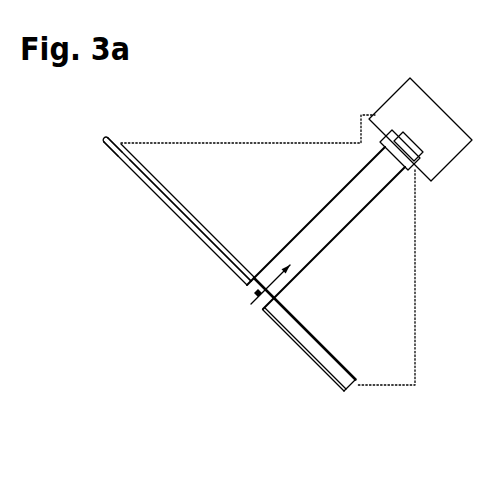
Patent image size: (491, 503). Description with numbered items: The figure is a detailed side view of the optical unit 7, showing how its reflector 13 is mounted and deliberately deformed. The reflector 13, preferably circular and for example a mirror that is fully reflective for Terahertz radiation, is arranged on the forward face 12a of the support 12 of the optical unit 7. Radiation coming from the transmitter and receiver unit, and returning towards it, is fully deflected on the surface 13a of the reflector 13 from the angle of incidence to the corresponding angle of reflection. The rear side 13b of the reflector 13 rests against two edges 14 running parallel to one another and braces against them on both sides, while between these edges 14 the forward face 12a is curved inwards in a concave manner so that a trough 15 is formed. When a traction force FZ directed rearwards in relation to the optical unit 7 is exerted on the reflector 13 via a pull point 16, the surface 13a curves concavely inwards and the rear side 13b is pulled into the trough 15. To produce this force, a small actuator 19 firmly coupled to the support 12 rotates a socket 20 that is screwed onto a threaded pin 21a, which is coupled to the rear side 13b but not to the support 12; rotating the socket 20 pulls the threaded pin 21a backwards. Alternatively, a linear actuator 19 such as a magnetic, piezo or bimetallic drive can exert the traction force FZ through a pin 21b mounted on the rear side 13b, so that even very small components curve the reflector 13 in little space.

The optical unit 7 is at (262, 142).
The support 12 is at (318, 165).
The forward face 12a is at (353, 392).
The reflector 13 is at (120, 156).
The surface 13a is at (147, 197).
The rear side 13b is at (111, 142).
The edges 14 is at (220, 257).
The trough 15 is at (134, 164).
The pull point 16 is at (256, 300).
The actuator 19 is at (455, 120).
The socket 20 is at (413, 163).
The threaded pin 21a is at (318, 232).
The pin 21b is at (318, 232).
The traction force FZ is at (283, 283).